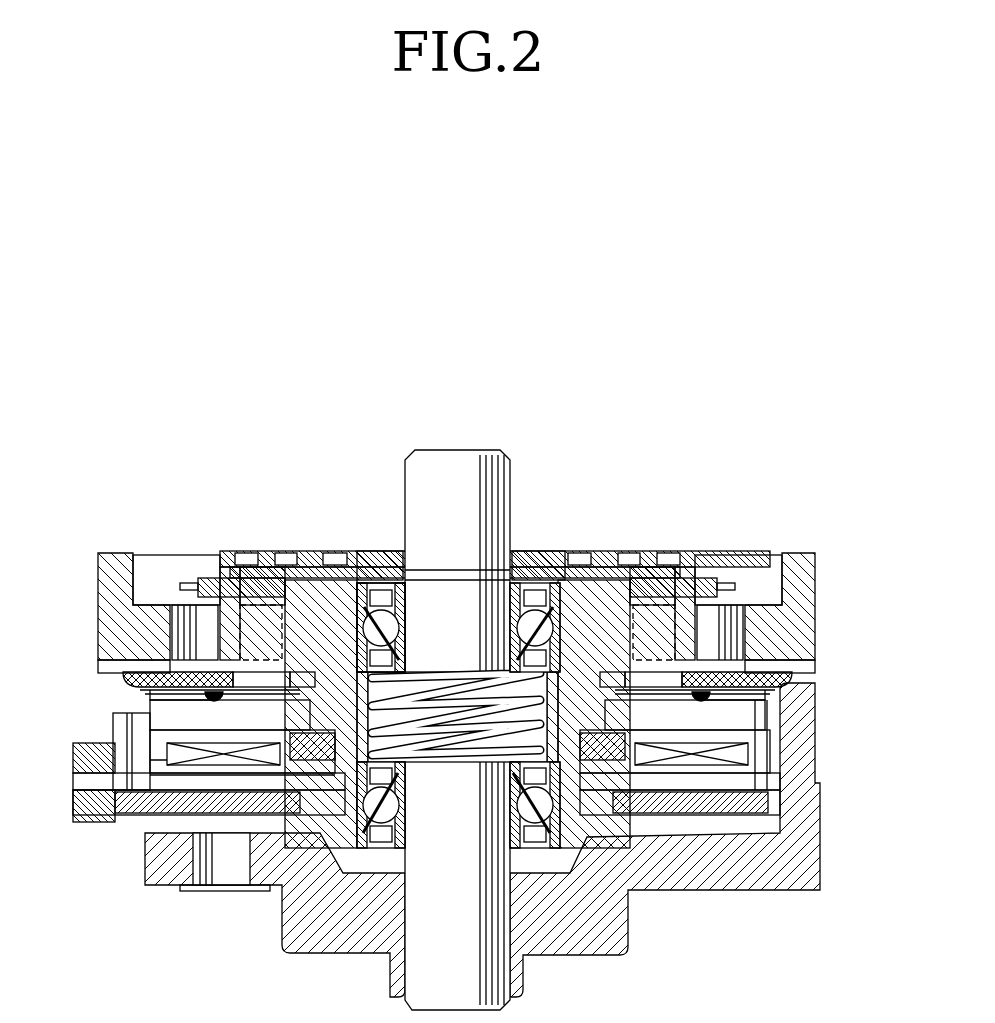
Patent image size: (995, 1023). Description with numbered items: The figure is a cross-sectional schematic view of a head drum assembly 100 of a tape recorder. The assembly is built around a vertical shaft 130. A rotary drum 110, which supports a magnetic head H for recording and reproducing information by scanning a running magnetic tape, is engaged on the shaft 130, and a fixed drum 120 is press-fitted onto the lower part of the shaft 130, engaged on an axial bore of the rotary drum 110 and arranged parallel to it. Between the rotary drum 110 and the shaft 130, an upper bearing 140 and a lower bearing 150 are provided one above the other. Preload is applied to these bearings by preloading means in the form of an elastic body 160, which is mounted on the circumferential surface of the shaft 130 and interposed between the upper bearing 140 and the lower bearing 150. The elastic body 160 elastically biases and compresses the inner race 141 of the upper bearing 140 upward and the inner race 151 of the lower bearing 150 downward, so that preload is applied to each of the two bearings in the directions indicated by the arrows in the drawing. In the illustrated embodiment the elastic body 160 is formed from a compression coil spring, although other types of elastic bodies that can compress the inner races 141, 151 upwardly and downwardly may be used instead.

The head drum assembly 100 is at (631, 426).
The rotary drum 110 is at (806, 622).
The fixed drum 120 is at (806, 804).
The shaft 130 is at (457, 466).
The upper bearing 140 is at (354, 588).
The inner race of the upper bearing 141 is at (392, 596).
The lower bearing 150 is at (328, 848).
The inner race of the lower bearing 151 is at (367, 840).
The elastic body 160 is at (452, 766).
The magnetic head H is at (98, 676).